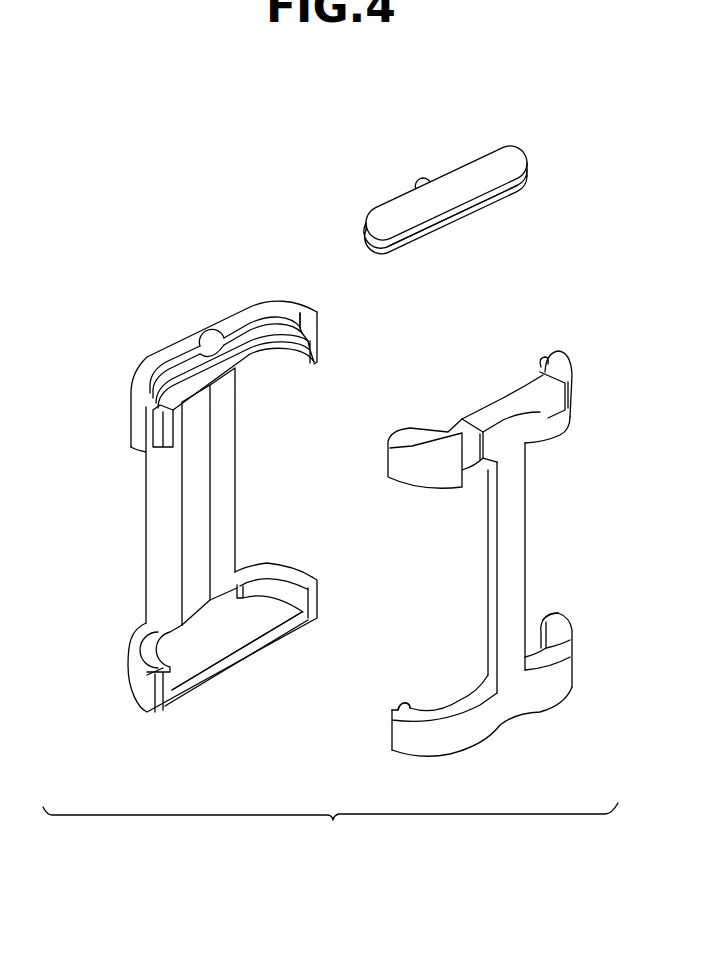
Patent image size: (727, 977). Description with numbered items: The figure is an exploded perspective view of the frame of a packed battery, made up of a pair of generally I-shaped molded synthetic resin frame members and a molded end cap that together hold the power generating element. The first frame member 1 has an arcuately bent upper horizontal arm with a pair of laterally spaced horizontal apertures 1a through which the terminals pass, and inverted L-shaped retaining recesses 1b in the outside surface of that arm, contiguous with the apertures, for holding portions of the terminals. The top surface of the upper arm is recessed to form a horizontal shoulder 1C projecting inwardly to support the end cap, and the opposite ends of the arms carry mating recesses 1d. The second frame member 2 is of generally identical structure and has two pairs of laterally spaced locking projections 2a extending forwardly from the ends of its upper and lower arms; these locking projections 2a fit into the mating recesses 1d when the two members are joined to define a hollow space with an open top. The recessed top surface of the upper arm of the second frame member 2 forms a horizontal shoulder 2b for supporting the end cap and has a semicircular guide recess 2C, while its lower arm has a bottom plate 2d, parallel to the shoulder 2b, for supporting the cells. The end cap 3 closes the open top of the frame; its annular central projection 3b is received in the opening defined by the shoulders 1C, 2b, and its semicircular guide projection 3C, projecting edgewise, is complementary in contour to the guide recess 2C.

The first frame member 1 is at (440, 742).
The horizontal apertures 1a is at (470, 468).
The retaining recesses 1b is at (455, 428).
The horizontal shoulder 1C is at (543, 360).
The mating recesses 1d is at (403, 703).
The second frame member 2 is at (248, 310).
The locking projections 2a is at (162, 433).
The horizontal shoulder 2b is at (163, 417).
The semicircular guide recess 2C is at (210, 337).
The bottom plate 2d is at (220, 650).
The end cap 3 is at (503, 163).
The annular central projection 3b is at (408, 252).
The semicircular guide projection 3C is at (423, 177).